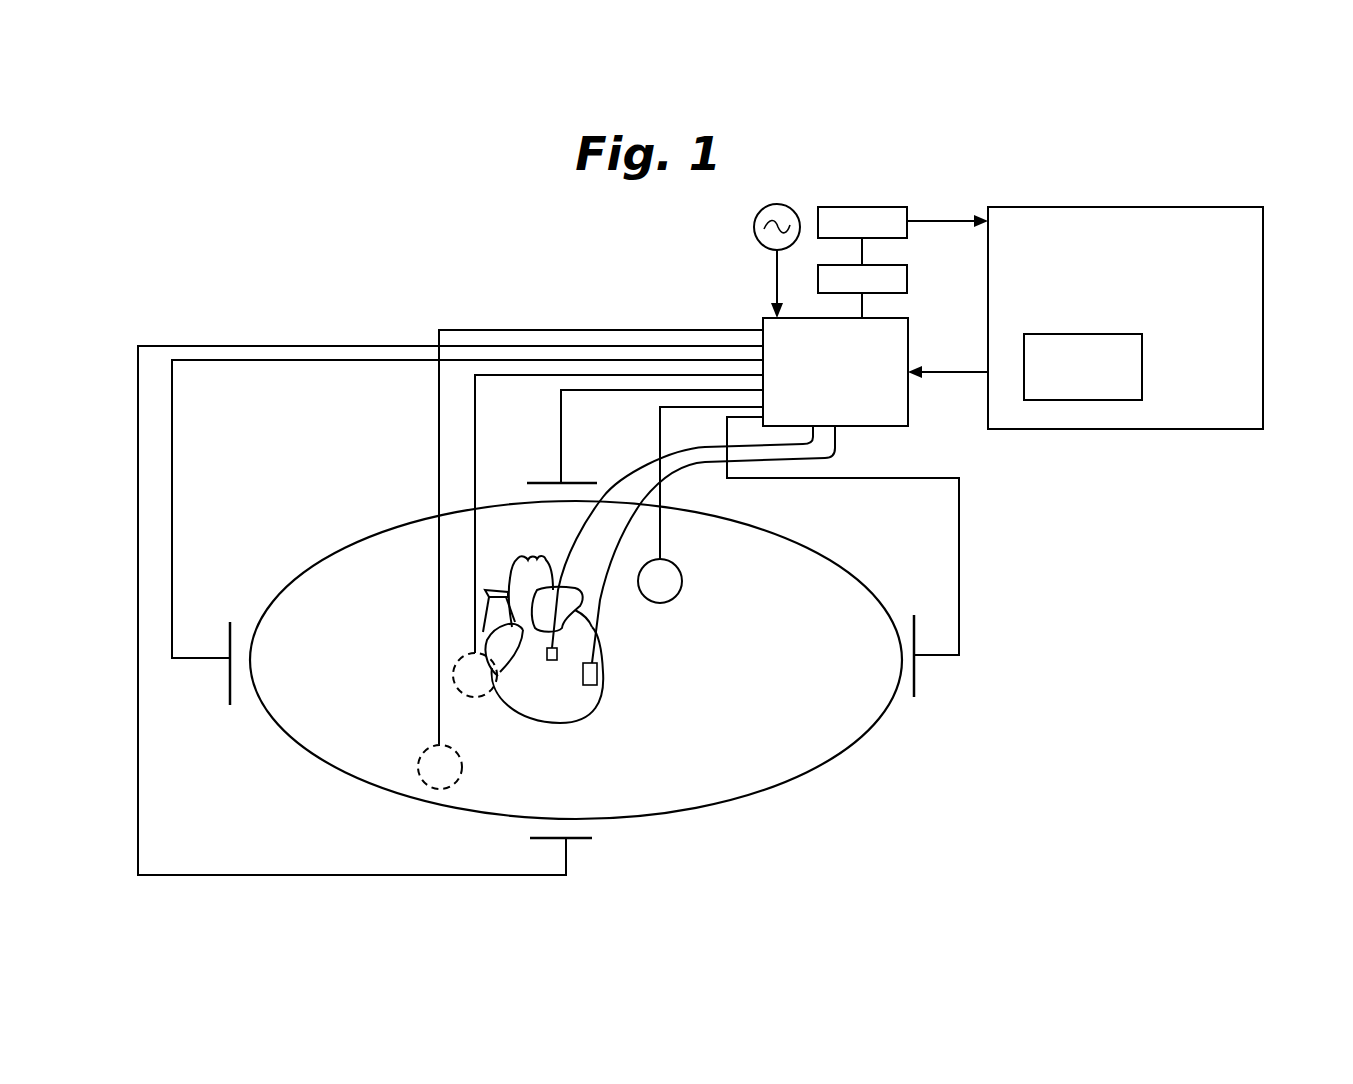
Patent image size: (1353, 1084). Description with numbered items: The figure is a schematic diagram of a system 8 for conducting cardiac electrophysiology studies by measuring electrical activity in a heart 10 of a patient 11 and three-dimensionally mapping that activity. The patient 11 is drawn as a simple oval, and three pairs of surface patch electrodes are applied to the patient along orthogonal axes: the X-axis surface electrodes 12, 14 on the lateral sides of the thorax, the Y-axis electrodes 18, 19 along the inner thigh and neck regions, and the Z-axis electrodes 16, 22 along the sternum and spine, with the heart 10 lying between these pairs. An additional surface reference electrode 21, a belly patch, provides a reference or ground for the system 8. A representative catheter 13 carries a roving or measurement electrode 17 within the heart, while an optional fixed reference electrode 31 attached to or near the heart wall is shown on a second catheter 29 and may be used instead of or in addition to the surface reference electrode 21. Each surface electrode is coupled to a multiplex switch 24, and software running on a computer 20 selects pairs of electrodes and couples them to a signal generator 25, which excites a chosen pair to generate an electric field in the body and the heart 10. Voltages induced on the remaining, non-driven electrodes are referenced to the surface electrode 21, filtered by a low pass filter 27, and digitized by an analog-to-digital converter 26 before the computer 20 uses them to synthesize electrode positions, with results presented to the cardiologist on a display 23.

The system 8 is at (430, 255).
The heart 10 is at (603, 665).
The patient 11 is at (800, 545).
The X-axis surface electrode 12 is at (550, 482).
The catheter 13 is at (830, 449).
The X-axis surface electrode 14 is at (566, 856).
The Z-axis electrode 16 is at (662, 530).
The catheter electrode 17 is at (596, 675).
The Y-axis electrode 18 is at (230, 692).
The Y-axis electrode 19 is at (916, 680).
The computer 20 is at (1085, 318).
The surface reference electrode 21 is at (443, 727).
The Z-axis electrode 22 is at (473, 542).
The display 23 is at (1083, 367).
The multiplex switch 24 is at (835, 372).
The signal generator 25 is at (755, 222).
The analog-to-digital converter 26 is at (868, 207).
The low pass filter 27 is at (907, 284).
The second catheter 29 is at (578, 522).
The fixed reference electrode 31 is at (560, 652).